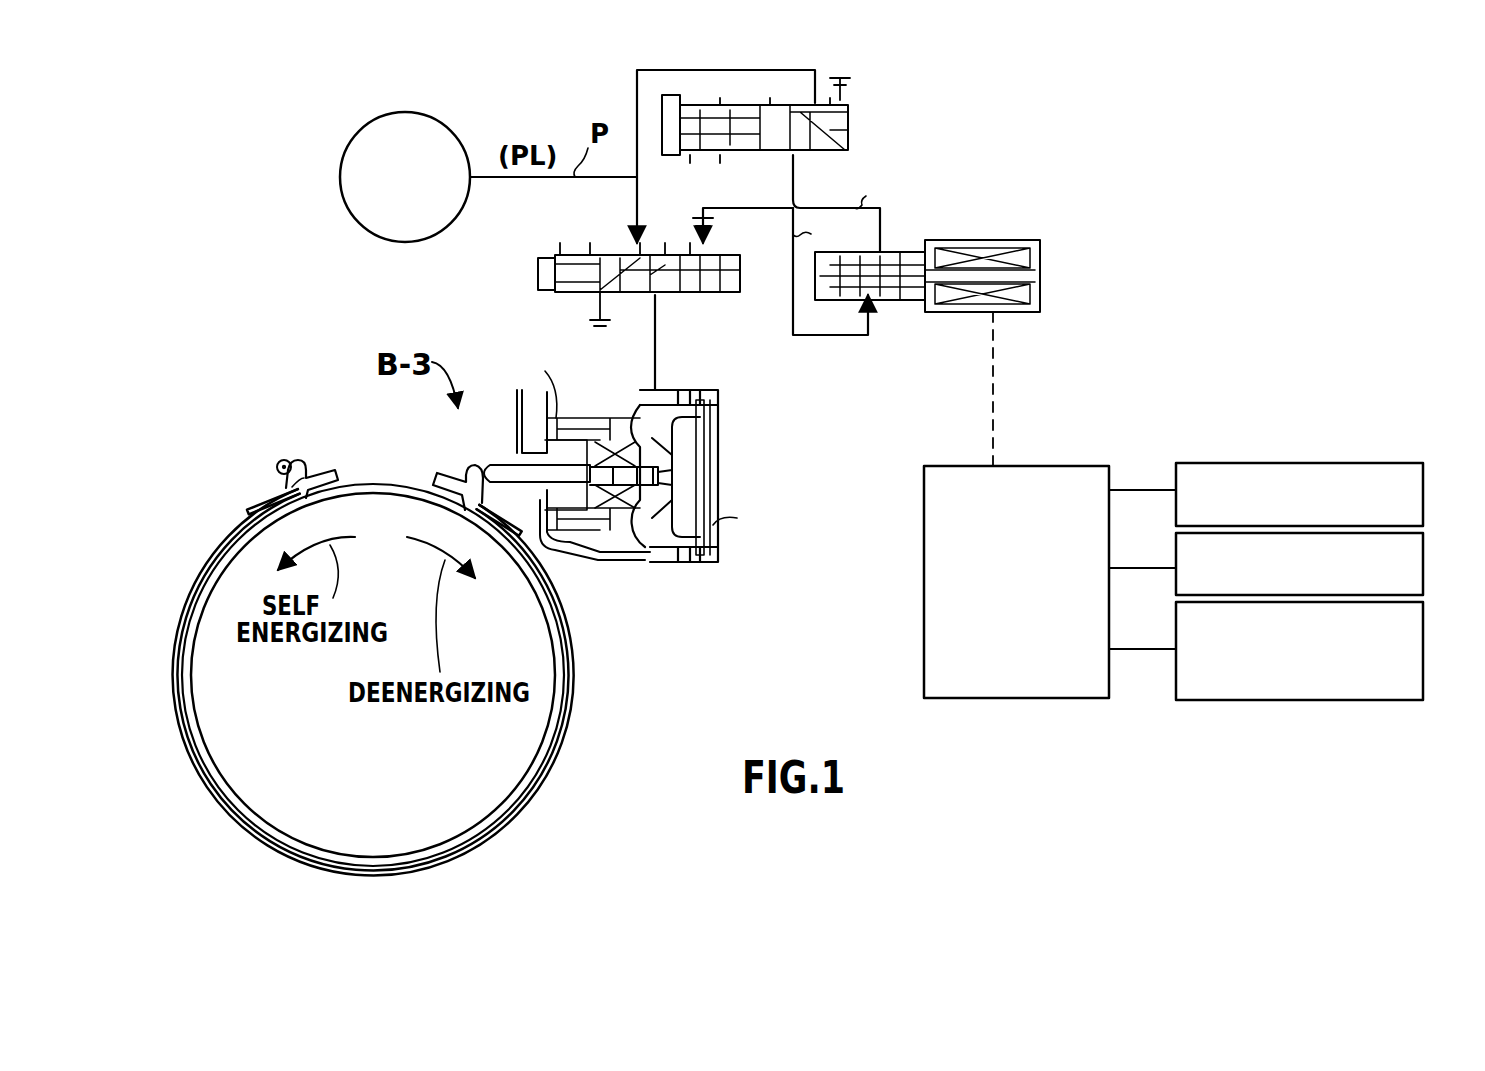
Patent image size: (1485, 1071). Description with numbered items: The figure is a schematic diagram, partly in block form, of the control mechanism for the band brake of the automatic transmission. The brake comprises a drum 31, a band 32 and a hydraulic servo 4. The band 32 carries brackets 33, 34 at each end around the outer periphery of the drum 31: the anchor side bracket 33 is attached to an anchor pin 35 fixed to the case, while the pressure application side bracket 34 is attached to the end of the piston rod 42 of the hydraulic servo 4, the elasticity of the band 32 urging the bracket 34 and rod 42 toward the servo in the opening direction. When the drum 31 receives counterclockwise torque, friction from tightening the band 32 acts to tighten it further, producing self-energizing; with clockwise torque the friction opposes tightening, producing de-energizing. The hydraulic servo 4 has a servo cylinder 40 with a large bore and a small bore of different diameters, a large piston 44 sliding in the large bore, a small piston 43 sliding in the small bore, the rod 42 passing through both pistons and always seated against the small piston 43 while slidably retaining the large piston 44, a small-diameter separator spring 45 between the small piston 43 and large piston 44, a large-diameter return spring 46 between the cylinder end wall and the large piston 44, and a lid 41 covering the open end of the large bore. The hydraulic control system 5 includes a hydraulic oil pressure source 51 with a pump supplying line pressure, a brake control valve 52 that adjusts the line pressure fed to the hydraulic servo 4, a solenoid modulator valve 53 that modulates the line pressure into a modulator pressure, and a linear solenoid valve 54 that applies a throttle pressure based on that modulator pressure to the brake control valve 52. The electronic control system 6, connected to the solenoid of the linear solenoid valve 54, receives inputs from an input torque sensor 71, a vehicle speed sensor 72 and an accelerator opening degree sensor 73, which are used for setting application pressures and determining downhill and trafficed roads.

The hydraulic servo 4 is at (633, 476).
The hydraulic control system 5 is at (882, 75).
The electronic control system 6 is at (1070, 466).
The drum 31 is at (388, 484).
The band 32 is at (575, 636).
The anchor side bracket 33 is at (312, 465).
The pressure application side bracket 34 is at (472, 470).
The anchor pin 35 is at (277, 467).
The servo cylinder 40 is at (704, 390).
The lid 41 is at (690, 550).
The rod 42 is at (500, 462).
The small piston 43 is at (556, 550).
The large piston 44 is at (650, 552).
The separator spring 45 is at (622, 440).
The return spring 46 is at (598, 418).
The hydraulic oil pressure source 51 is at (470, 142).
The B-3 control valve 52 is at (523, 275).
The solenoid modulator valve 53 is at (868, 130).
The linear solenoid valve 54 is at (1058, 264).
The input torque sensor 71 is at (1425, 490).
The vehicle speed sensor 72 is at (1425, 570).
The accelerator opening degree sensor 73 is at (1425, 650).